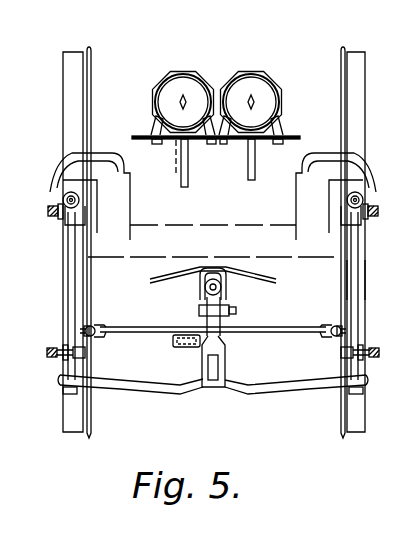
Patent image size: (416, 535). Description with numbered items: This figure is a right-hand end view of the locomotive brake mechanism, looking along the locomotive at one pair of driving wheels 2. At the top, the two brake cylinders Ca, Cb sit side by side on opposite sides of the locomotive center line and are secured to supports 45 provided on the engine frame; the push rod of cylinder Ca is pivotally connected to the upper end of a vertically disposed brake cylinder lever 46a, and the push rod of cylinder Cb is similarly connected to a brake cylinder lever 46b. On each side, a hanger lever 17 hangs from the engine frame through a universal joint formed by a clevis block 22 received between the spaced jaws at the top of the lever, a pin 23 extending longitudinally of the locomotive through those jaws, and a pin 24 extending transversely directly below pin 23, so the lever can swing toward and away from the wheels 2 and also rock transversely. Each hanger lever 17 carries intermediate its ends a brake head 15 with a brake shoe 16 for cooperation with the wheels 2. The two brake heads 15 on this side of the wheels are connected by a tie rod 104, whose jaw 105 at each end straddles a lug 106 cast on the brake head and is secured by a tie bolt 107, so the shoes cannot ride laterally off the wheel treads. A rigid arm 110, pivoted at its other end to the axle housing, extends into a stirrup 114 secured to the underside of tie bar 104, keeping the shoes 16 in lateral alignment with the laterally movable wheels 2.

The wheels 2 is at (72, 421).
The brake head 15 is at (360, 297).
The brake shoe 16 is at (352, 282).
The hanger lever 17 is at (70, 257).
The clevis block 22 is at (66, 192).
The pin 23 is at (62, 200).
The pin 24 is at (97, 213).
The supports 45 is at (268, 145).
The brake cylinder lever 46a is at (256, 162).
The brake cylinder lever 46b is at (188, 165).
The tie rod 104 is at (265, 334).
The jaw 105 is at (99, 328).
The lug 106 is at (98, 337).
The tie bolt 107 is at (92, 323).
The rigid arm 110 is at (176, 337).
The stirrup 114 is at (188, 348).
The brake cylinder Ca is at (278, 78).
The brake cylinder Cb is at (158, 87).